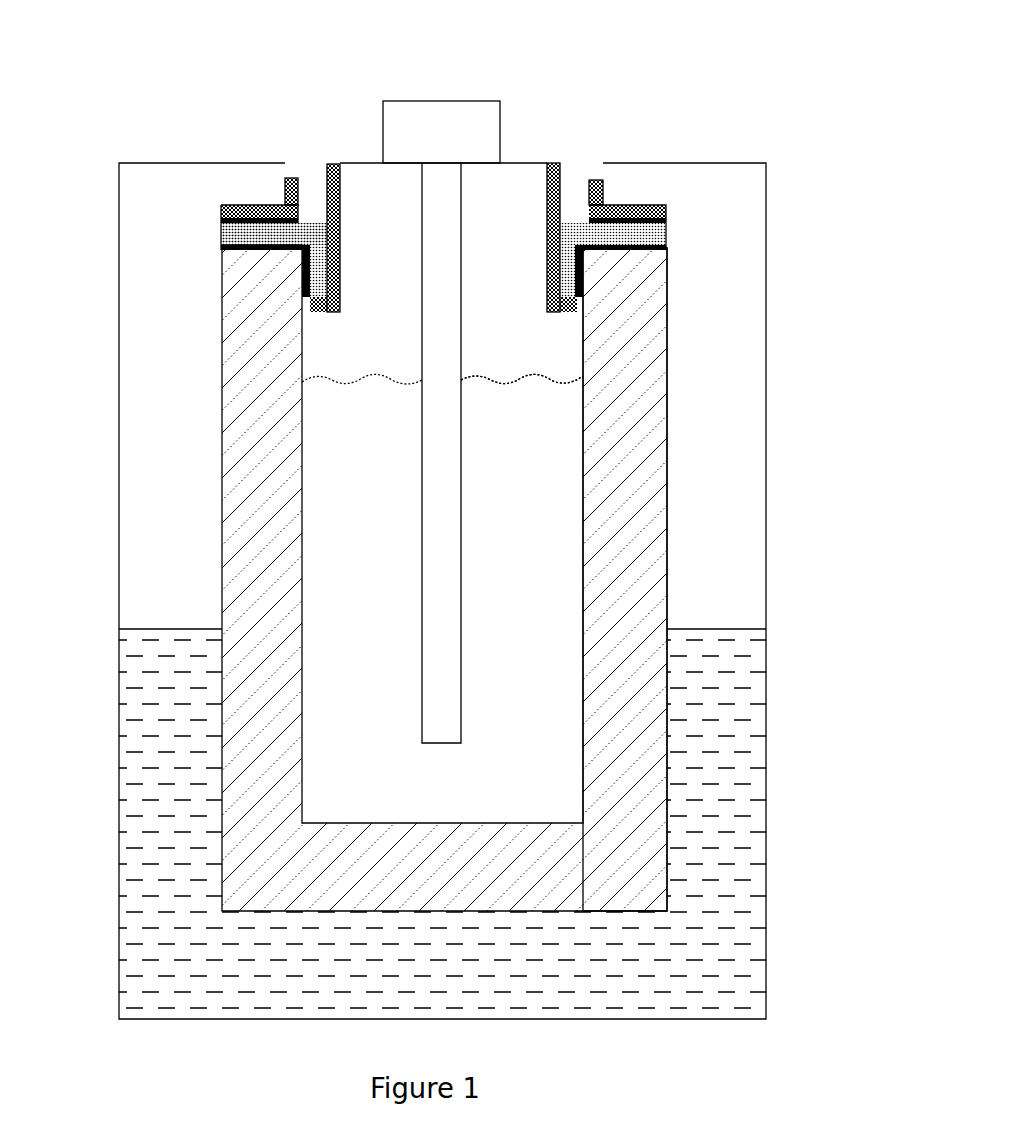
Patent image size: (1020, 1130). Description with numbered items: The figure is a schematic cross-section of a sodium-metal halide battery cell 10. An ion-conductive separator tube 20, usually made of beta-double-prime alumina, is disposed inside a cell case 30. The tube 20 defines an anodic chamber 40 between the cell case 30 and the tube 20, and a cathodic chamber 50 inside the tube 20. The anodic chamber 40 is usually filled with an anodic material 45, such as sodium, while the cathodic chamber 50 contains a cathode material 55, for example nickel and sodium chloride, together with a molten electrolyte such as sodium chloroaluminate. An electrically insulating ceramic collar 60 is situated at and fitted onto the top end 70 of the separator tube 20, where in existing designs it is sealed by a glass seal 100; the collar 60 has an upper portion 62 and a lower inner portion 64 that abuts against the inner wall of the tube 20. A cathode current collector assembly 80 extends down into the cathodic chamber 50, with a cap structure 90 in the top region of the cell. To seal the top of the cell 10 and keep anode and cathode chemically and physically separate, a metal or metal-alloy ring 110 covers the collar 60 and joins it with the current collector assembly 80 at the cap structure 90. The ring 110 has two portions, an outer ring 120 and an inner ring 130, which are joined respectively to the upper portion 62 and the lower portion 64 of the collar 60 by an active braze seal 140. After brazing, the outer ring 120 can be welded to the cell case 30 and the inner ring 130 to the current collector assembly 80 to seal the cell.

The sodium-metal halide battery cell 10 is at (624, 44).
The ion-conductive separator tube 20 is at (222, 342).
The cell case 30 is at (119, 416).
The anodic chamber 40 is at (197, 502).
The anodic material 45 is at (150, 843).
The cathodic chamber 50 is at (400, 364).
The cathode material 55 is at (525, 376).
The electrically insulating collar 60 is at (213, 231).
The upper portion 62 is at (222, 250).
The lower inner portion 64 is at (318, 236).
The top end 70 is at (637, 258).
The cathode current collector assembly 80 is at (435, 325).
The cap structure 90 is at (443, 101).
The glass seal 100 is at (667, 246).
The ring 110 is at (292, 170).
The outer ring 120 is at (285, 200).
The inner ring 130 is at (340, 193).
The active braze seal 140 is at (575, 218).